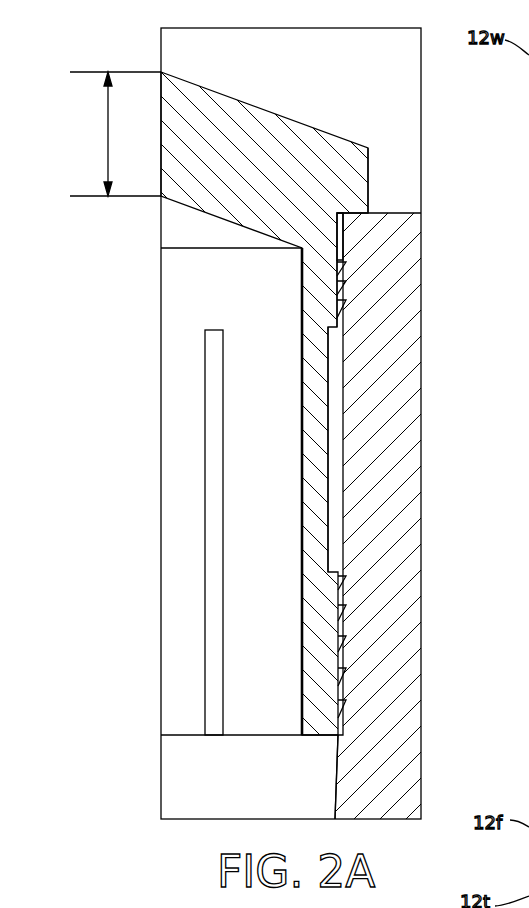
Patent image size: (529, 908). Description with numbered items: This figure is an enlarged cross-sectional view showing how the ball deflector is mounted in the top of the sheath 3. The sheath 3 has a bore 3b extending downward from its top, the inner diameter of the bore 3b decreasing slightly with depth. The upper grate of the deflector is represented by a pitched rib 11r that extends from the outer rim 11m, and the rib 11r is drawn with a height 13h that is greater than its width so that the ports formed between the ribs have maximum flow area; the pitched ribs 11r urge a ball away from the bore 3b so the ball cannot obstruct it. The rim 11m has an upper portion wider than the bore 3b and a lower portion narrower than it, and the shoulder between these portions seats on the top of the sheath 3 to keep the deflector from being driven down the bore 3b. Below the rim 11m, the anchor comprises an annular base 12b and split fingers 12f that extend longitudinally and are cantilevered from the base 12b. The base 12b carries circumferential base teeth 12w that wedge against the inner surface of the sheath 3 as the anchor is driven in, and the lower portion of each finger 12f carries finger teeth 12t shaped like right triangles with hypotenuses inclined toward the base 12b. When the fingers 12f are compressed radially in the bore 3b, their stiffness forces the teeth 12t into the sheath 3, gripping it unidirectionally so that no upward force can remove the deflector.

The rib 11r is at (268, 116).
The outer rim 11m is at (371, 176).
The base teeth 12w is at (342, 281).
The annular base 12b is at (310, 288).
The split finger 12f is at (304, 440).
The finger teeth 12t is at (340, 608).
The sheath 3 is at (412, 402).
The sheath bore 3b is at (335, 800).
The rib height 13h is at (107, 142).